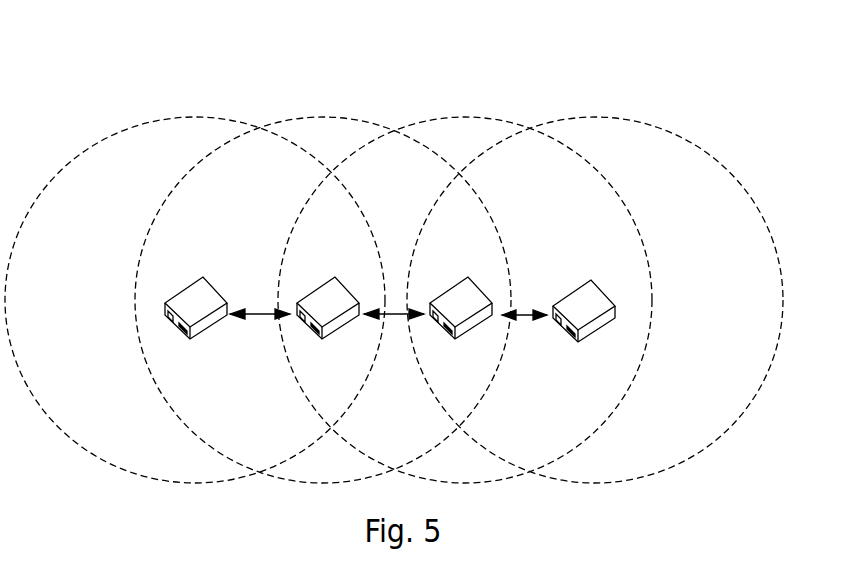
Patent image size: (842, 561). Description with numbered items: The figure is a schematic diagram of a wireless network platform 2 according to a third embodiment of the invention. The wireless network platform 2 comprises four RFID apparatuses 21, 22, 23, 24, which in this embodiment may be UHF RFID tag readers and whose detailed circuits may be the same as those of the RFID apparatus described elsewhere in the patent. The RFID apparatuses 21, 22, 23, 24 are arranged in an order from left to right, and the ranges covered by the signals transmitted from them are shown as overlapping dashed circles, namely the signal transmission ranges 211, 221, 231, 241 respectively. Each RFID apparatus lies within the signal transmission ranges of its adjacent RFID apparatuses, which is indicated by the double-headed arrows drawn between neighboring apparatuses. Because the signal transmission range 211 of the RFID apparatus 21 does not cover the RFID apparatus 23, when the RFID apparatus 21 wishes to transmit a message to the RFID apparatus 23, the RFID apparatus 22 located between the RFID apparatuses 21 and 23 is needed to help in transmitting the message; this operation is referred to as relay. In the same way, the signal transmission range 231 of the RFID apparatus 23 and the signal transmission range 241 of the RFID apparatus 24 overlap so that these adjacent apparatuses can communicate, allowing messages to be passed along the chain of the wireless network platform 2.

The wireless network platform 2 is at (556, 54).
The RFID apparatus 21 is at (203, 277).
The RFID apparatus 22 is at (335, 277).
The RFID apparatus 23 is at (468, 277).
The RFID apparatus 24 is at (591, 280).
The signal transmission range 211 is at (187, 117).
The signal transmission range 221 is at (323, 117).
The signal transmission range 231 is at (455, 117).
The signal transmission range 241 is at (740, 187).